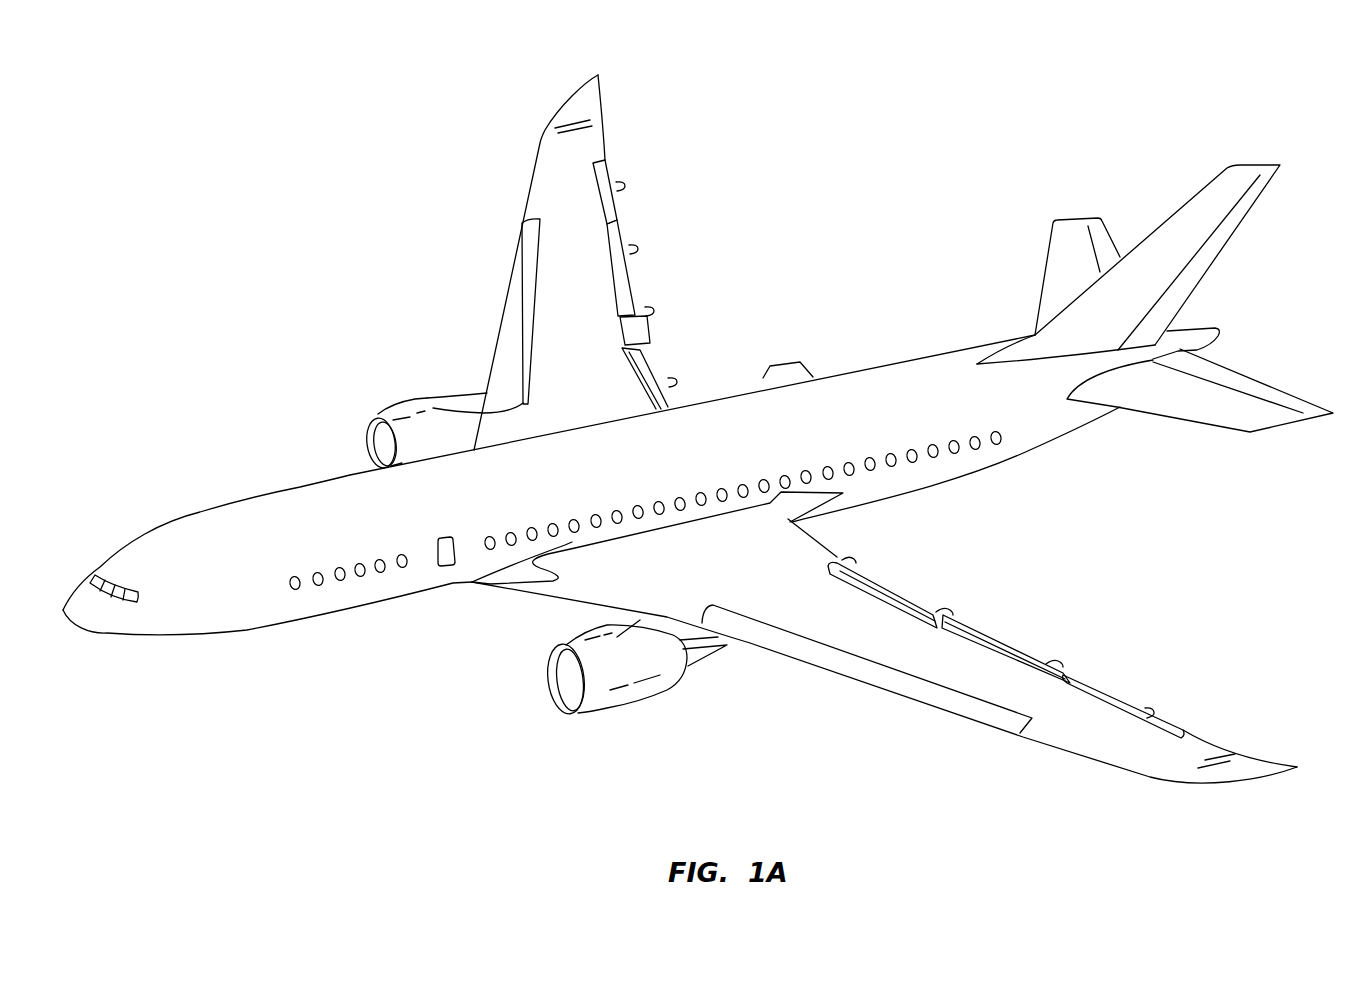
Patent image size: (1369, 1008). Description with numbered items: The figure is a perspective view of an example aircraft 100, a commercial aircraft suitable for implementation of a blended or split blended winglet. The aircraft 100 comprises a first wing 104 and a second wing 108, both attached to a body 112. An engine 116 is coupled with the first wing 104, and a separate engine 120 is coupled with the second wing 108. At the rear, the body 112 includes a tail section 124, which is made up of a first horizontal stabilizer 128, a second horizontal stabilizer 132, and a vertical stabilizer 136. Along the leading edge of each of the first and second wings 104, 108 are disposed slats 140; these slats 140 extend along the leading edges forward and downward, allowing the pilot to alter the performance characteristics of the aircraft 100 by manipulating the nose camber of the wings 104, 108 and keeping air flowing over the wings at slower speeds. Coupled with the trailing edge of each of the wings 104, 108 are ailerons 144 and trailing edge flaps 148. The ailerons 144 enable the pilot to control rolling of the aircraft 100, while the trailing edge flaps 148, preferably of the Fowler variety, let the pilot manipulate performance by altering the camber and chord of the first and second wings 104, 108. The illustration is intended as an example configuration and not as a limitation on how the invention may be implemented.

The aircraft 100 is at (1002, 65).
The first wing 104 is at (1158, 782).
The second wing 108 is at (566, 112).
The body 112 is at (243, 638).
The engine 116 is at (599, 714).
The engine 120 is at (387, 406).
The tail section 124 is at (1249, 284).
The first horizontal stabilizer 128 is at (1223, 427).
The second horizontal stabilizer 132 is at (1067, 220).
The vertical stabilizer 136 is at (1237, 166).
The slats 140 is at (519, 268).
The ailerons 144 is at (615, 168).
The trailing edge flaps 148 is at (635, 266).